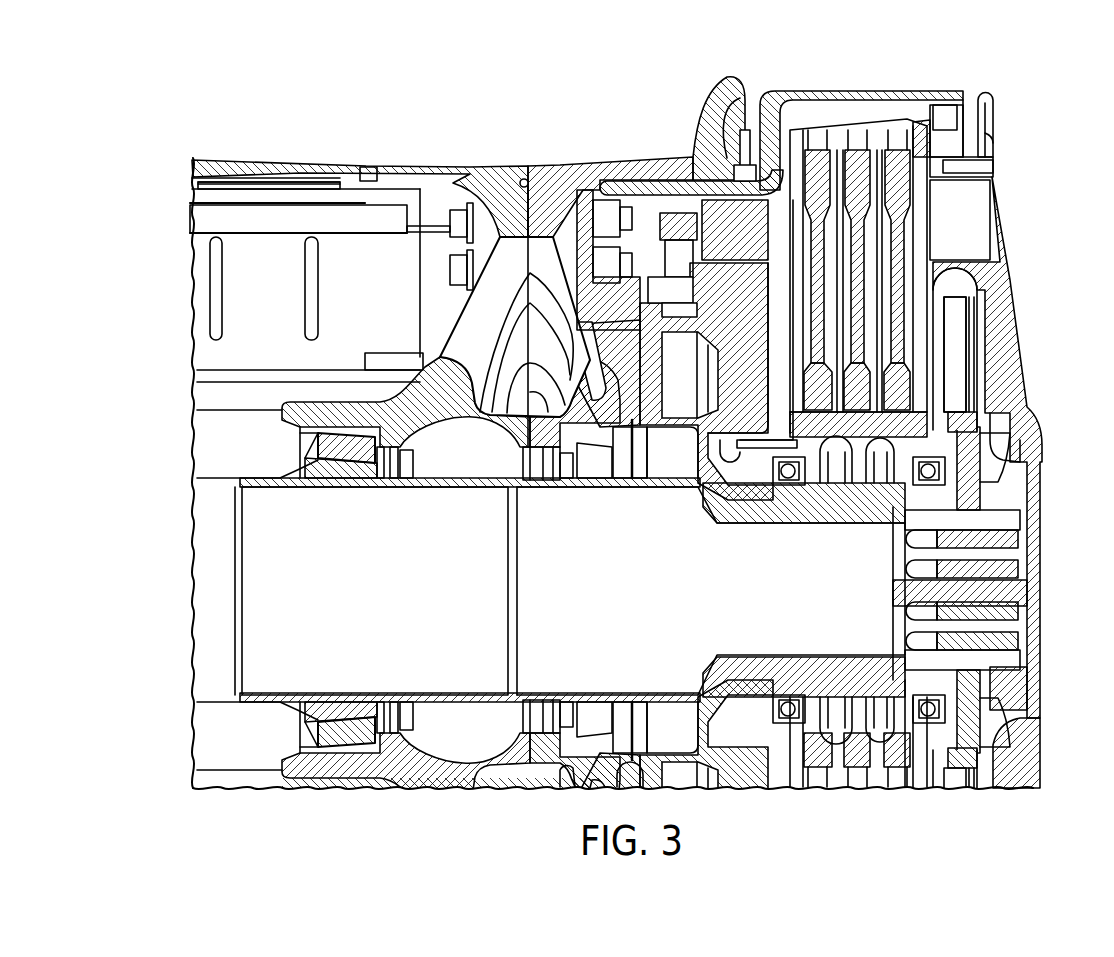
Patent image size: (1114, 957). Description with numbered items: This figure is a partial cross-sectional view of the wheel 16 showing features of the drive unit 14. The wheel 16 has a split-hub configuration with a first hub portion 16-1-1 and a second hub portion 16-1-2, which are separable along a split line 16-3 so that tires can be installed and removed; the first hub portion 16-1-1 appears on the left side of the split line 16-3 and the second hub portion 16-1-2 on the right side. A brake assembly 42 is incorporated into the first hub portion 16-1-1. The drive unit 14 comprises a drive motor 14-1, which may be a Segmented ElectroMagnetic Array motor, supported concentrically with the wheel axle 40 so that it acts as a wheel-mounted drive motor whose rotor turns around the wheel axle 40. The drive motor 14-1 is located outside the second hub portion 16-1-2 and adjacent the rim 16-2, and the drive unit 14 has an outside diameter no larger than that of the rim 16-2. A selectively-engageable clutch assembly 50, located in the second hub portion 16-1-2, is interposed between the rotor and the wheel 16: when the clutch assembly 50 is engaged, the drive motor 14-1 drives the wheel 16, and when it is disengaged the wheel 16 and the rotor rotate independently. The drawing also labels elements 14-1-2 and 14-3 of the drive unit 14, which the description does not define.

The drive unit 14 is at (928, 405).
The drive motor 14-1 is at (882, 230).
The stator winding end turn 14-1-2 is at (813, 395).
The rotor position sensor 14-3 is at (967, 343).
The wheel 16 is at (487, 246).
The first hub portion 16-1-1 is at (345, 166).
The second hub portion 16-1-2 is at (693, 186).
The rim 16-2 is at (698, 92).
The split line 16-3 is at (515, 286).
The wheel axle 40 is at (835, 609).
The brake assembly 42 is at (253, 270).
The clutch assembly 50 is at (718, 225).